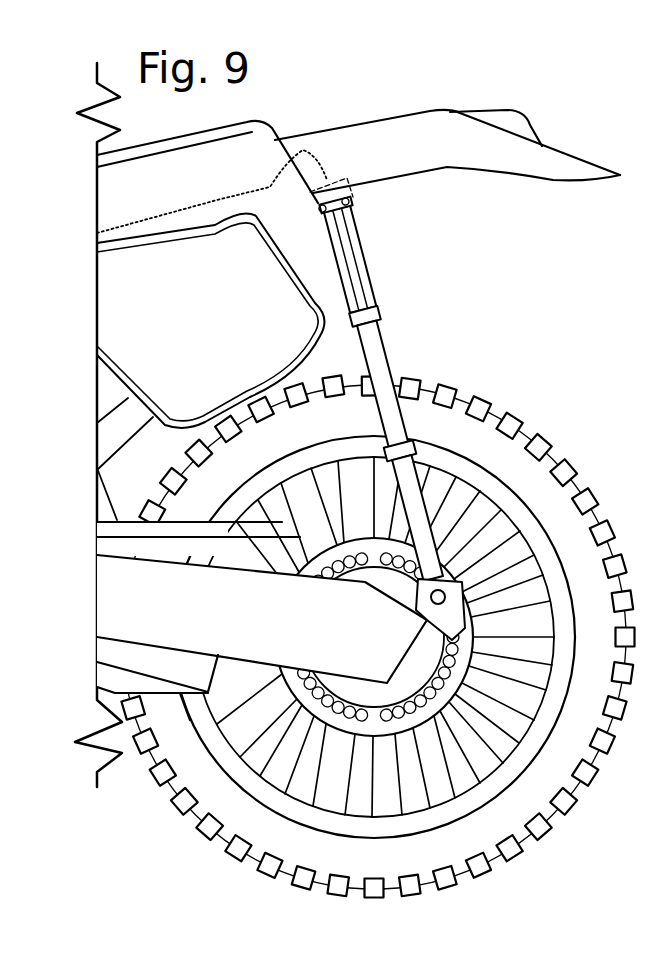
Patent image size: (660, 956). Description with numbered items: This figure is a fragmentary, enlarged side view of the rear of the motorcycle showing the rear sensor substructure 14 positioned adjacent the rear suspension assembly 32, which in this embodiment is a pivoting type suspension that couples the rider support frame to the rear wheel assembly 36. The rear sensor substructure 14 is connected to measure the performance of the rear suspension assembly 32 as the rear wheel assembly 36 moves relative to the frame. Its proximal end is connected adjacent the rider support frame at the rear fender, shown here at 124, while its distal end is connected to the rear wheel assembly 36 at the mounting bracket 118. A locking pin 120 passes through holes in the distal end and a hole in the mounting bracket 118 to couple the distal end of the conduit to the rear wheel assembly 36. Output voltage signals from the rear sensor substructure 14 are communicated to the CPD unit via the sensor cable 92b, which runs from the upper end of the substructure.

The sensor cable 92b is at (327, 157).
The rear fender 124 is at (576, 157).
The rear sensor substructure 14 is at (382, 360).
The locking pin 120 is at (441, 588).
The mounting bracket 118 is at (453, 622).
The rear suspension assembly 32 is at (244, 626).
The rear wheel assembly 36 is at (611, 774).